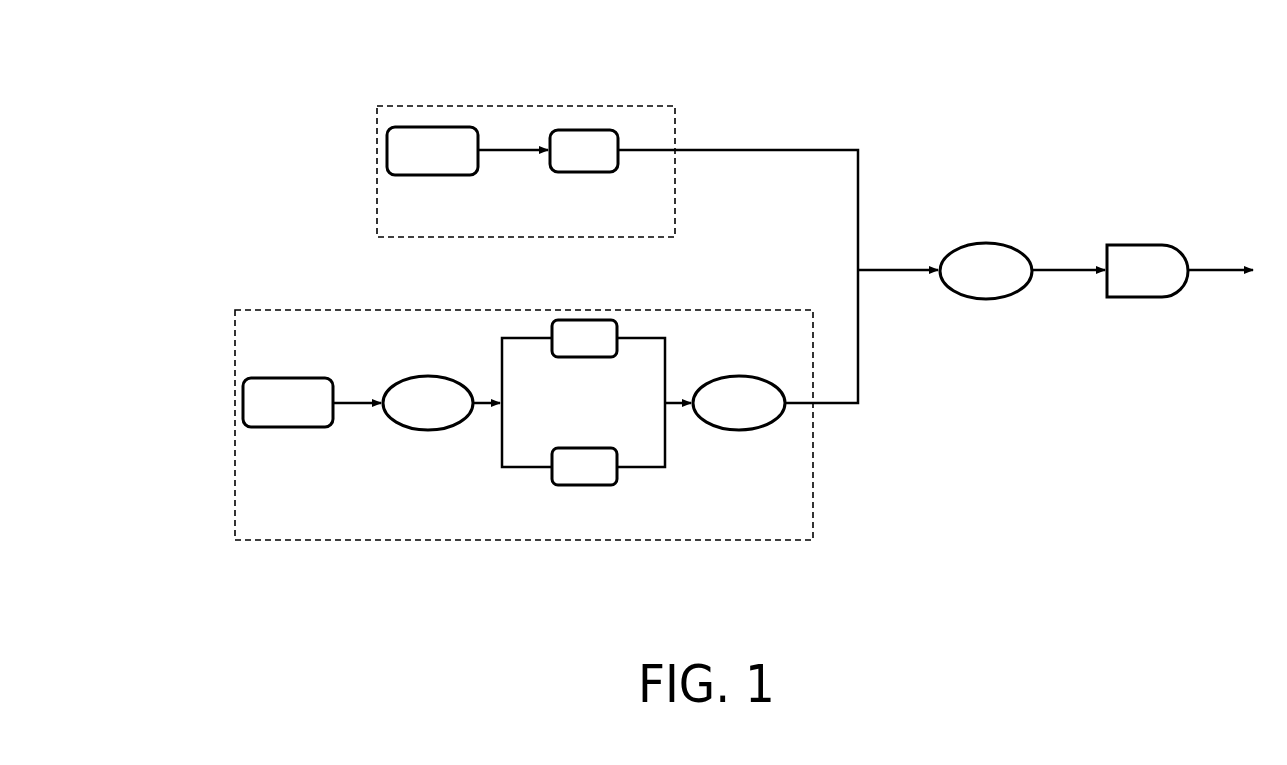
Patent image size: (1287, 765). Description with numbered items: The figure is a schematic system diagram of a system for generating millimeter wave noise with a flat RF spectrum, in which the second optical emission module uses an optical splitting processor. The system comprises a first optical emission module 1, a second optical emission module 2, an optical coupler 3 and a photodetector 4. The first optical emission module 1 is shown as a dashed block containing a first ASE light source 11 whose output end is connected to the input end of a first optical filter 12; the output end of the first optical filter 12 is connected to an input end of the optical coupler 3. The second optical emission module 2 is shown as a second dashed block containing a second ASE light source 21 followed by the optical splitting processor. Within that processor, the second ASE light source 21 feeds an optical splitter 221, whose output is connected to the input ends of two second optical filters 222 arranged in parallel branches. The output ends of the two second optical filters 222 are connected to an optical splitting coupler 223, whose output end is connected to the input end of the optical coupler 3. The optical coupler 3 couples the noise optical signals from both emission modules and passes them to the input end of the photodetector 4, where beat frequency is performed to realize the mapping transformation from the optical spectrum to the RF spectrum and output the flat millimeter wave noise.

The first optical emission module 1 is at (377, 106).
The first ASE light source 11 is at (427, 175).
The first optical filter 12 is at (590, 172).
The second optical emission module 2 is at (237, 310).
The second ASE light source 21 is at (293, 427).
The optical splitter 221 is at (437, 430).
The second optical filter 222 is at (592, 357).
The optical splitting coupler 223 is at (747, 377).
The optical coupler 3 is at (990, 243).
The photodetector 4 is at (1147, 245).